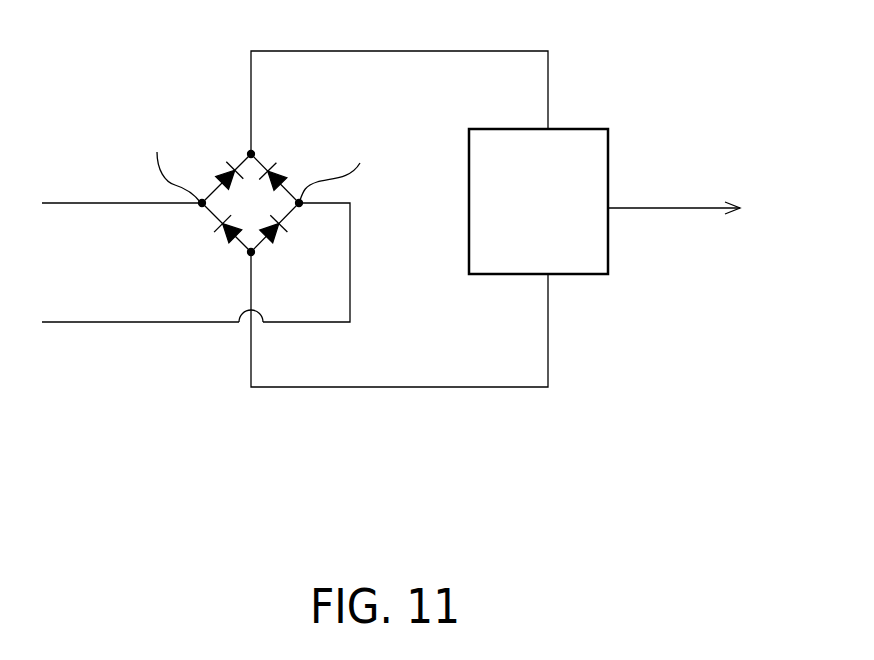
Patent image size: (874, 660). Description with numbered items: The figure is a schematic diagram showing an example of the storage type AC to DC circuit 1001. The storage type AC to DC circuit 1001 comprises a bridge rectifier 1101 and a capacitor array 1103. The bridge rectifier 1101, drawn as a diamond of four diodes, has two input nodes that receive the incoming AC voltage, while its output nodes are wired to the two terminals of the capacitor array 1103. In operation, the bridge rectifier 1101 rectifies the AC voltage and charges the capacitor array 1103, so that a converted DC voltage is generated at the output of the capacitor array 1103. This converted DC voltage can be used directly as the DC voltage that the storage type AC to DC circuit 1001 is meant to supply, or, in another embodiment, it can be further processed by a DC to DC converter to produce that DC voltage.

The storage type AC to DC circuit 1001 is at (192, 66).
The bridge rectifier 1101 is at (232, 258).
The capacitor array 1103 is at (608, 160).